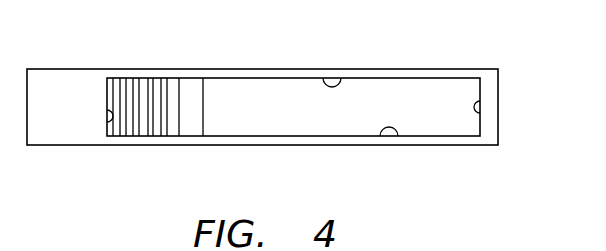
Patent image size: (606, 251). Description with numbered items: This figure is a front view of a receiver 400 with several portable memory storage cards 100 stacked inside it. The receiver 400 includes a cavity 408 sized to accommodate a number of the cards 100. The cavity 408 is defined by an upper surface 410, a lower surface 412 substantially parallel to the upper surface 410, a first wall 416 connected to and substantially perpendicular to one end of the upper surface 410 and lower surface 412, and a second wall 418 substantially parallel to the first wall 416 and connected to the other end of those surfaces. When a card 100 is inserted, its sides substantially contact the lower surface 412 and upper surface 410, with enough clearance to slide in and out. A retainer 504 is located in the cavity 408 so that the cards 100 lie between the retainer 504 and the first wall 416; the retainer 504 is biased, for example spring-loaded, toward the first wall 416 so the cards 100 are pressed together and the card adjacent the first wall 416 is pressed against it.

The receiver 400 is at (410, 68).
The cavity 408 is at (307, 113).
The upper surface 410 is at (341, 77).
The lower surface 412 is at (397, 133).
The first wall 416 is at (107, 116).
The second wall 418 is at (482, 107).
The retainer 504 is at (192, 90).
The portable memory storage card 100 is at (172, 78).